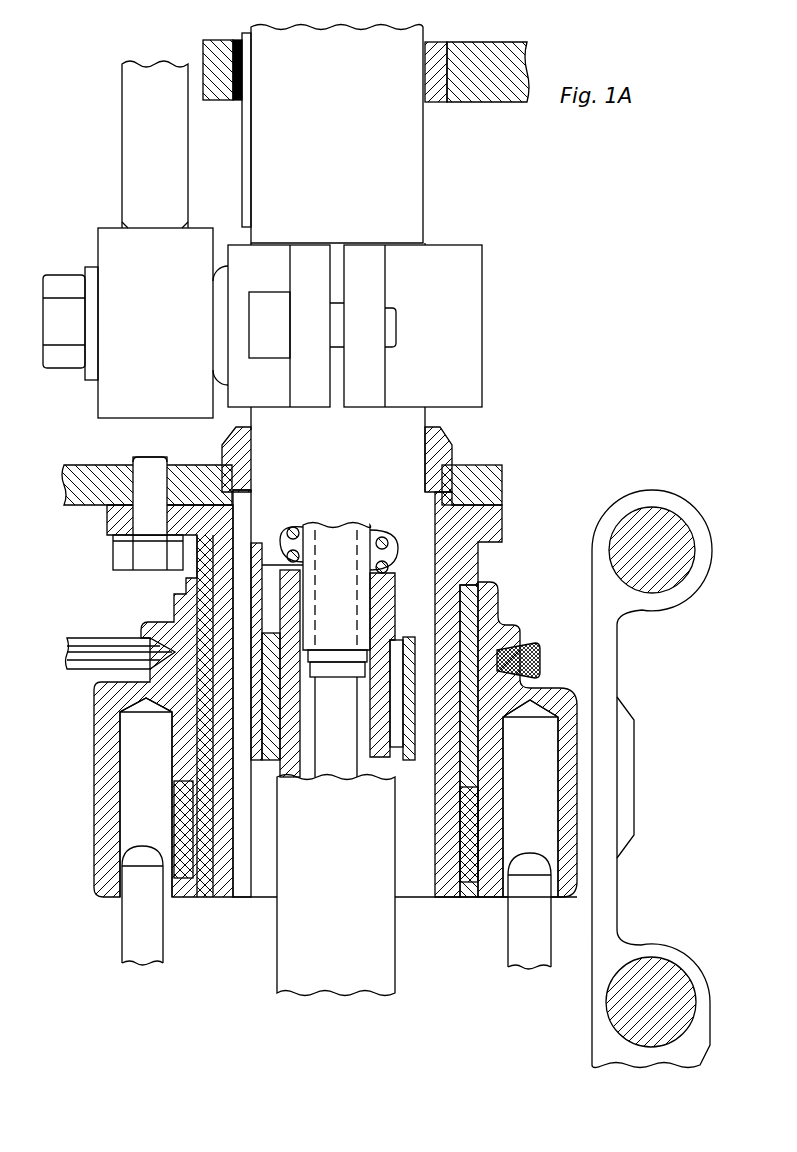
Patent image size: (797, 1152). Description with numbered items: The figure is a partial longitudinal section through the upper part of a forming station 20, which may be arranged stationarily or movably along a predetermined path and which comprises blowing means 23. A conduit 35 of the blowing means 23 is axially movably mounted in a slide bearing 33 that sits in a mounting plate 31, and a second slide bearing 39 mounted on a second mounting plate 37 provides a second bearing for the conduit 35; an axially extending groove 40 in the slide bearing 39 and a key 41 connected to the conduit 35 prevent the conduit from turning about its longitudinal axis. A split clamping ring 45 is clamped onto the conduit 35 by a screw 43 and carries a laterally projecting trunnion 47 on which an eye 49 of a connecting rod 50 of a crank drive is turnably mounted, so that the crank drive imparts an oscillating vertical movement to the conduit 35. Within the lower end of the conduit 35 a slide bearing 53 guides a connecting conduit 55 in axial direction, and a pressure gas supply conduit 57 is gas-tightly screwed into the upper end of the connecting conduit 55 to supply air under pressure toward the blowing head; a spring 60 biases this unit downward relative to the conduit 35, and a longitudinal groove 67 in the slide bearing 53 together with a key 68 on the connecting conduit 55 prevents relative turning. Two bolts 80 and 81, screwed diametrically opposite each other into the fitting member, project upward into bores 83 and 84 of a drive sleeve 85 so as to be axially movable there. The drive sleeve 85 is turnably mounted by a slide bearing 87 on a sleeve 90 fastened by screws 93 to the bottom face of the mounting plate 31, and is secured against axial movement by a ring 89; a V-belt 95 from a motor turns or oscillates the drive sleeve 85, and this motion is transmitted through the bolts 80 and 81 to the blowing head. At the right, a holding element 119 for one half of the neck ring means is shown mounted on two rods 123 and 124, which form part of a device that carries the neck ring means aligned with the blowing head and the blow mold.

The forming station 20 is at (580, 316).
The blowing means 23 is at (276, 968).
The mounting plate 31 is at (90, 465).
The slide bearing 33 is at (452, 436).
The conduit 35 is at (426, 205).
The second mounting plate 37 is at (490, 103).
The second slide bearing 39 is at (430, 103).
The axially extending groove 40 is at (238, 102).
The key 41 is at (243, 178).
The screw 43 is at (258, 298).
The split clamping ring 45 is at (482, 300).
The trunnion 47 is at (50, 372).
The eye 49 is at (98, 248).
The connecting rod 50 is at (120, 119).
The slide bearing 53 is at (268, 762).
The connecting conduit 55 is at (244, 812).
The pressure gas supply conduit 57 is at (392, 538).
The spring 60 is at (290, 542).
The longitudinal groove 67 is at (400, 760).
The key 68 is at (366, 780).
The bolt 80 is at (128, 968).
The bolt 81 is at (508, 960).
The bore 83 is at (172, 745).
The bore 84 is at (558, 745).
The drive sleeve 85 is at (92, 884).
The slide bearing 87 is at (470, 592).
The ring 89 is at (470, 884).
The sleeve 90 is at (482, 570).
The screw 93 is at (113, 562).
The V-belt 95 is at (106, 636).
The holding element 119 is at (618, 640).
The rod 123 is at (653, 522).
The rod 124 is at (662, 996).